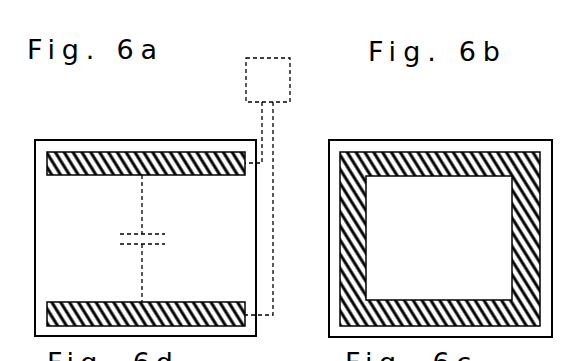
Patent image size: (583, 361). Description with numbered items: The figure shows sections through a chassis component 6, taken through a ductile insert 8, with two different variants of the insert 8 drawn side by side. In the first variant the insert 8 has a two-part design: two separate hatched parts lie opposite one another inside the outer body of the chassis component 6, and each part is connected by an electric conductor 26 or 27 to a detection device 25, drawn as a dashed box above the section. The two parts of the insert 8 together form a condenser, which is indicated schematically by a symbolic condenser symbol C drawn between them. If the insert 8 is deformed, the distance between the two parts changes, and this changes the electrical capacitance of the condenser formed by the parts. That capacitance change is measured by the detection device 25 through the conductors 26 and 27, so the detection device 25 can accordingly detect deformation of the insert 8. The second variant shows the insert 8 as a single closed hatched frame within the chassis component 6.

In FIG. 6A, the substrate / chip body 6 is at (77, 140).
In FIG. 6B, the substrate / chip body 6 is at (395, 140).
In FIG. 6A, the ductile insert 8 is at (137, 156).
In FIG. 6B, the ductile insert 8 is at (462, 156).
In FIG. 6A, the detection device 25 is at (270, 58).
In FIG. 6A, the electric conductor 26 is at (273, 123).
In FIG. 6A, the electric conductor 27 is at (271, 279).
In FIG. 6A, the condenser symbol C is at (152, 238).